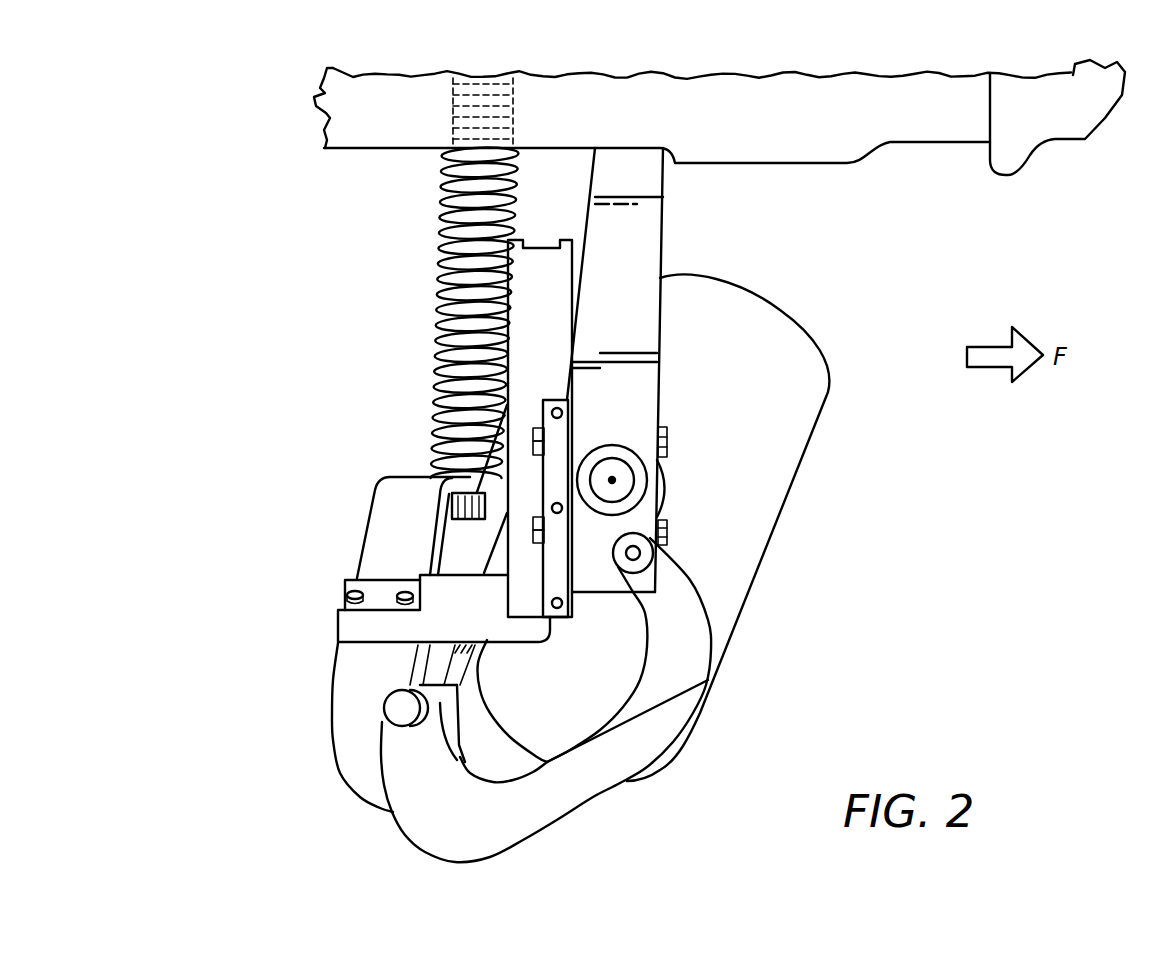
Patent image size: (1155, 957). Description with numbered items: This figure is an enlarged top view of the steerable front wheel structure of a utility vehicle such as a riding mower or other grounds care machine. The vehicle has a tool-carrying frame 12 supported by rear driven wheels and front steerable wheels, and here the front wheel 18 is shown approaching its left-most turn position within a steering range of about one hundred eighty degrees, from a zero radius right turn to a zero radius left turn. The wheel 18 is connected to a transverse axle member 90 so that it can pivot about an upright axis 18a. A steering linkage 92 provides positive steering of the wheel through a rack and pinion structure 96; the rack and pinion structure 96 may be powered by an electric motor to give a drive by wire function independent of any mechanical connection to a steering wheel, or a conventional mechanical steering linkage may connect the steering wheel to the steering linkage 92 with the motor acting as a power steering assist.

The tool-carrying frame 12 is at (928, 150).
The front steerable wheel 18 is at (808, 432).
The upright axis 18a is at (616, 479).
The transverse axle member 90 is at (655, 235).
The steering linkage 92 is at (313, 730).
The rack and pinion structure 96 is at (428, 103).